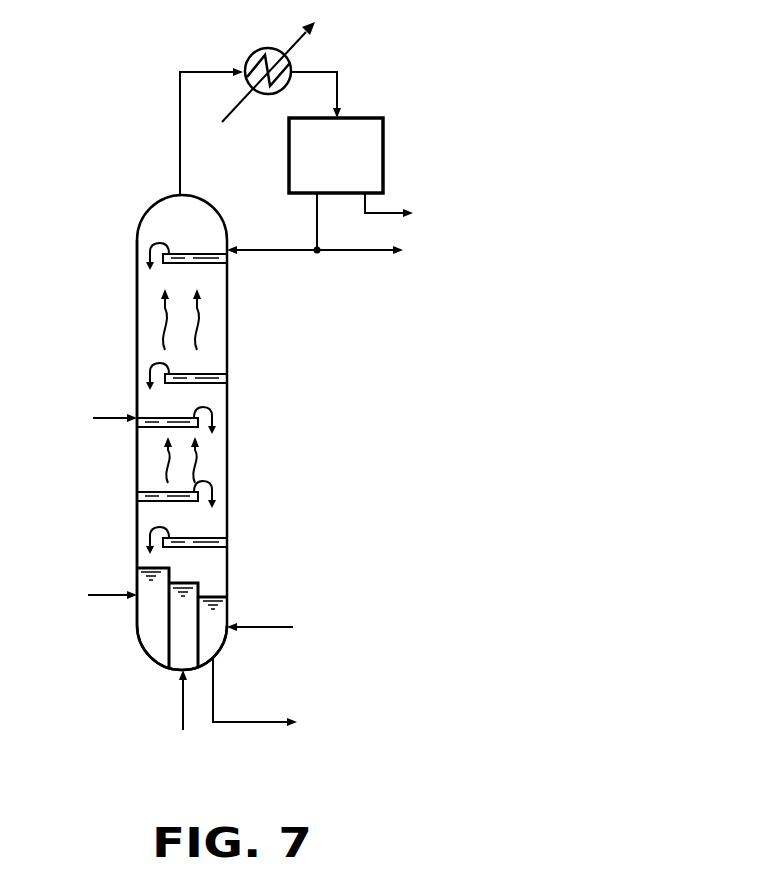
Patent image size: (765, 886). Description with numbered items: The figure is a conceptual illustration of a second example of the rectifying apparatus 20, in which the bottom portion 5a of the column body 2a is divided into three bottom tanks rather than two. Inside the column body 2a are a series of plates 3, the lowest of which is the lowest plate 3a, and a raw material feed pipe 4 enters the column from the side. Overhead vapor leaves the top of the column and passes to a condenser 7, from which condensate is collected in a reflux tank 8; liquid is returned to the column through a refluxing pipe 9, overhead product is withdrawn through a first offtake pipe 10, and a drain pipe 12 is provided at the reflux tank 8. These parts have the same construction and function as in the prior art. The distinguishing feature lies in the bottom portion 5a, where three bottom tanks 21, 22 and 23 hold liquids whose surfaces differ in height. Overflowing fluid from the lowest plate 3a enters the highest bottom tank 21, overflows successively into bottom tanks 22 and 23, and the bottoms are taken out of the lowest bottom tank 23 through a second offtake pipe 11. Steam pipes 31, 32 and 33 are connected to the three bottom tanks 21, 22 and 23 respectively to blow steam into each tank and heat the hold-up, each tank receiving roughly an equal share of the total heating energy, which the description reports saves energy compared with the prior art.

The rectifying apparatus 20 is at (104, 228).
The column body 2a is at (137, 358).
The plates 3 is at (202, 374).
The lowest plate 3a is at (208, 550).
The raw material feed pipe 4 is at (112, 417).
The condenser 7 is at (251, 55).
The reflux tank 8 is at (383, 155).
The refluxing pipe 9 is at (276, 252).
The first offtake pipe 10 is at (358, 253).
The second offtake pipe 11 is at (245, 724).
The drain pipe 12 is at (388, 205).
The bottom tank 21 is at (152, 608).
The bottom tank 22 is at (180, 627).
The bottom tank 23 is at (227, 645).
The bottom portion 5a is at (167, 668).
The steam pipe 31 is at (105, 593).
The steam pipe 32 is at (187, 719).
The steam pipe 33 is at (273, 627).